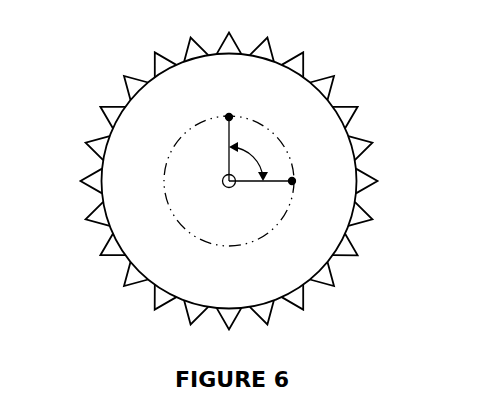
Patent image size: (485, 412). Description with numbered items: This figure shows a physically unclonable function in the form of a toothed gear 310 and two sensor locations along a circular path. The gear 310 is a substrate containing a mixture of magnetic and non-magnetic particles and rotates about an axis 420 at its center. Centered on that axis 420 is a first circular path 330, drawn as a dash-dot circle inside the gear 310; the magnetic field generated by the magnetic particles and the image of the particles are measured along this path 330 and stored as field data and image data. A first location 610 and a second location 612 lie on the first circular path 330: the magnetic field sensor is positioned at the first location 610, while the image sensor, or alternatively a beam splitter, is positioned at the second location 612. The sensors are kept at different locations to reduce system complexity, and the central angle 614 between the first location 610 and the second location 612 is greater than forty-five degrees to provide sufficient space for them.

The gear 310 is at (126, 104).
The first circular path 330 is at (180, 147).
The axis 420 is at (223, 186).
The first location 610 is at (228, 116).
The second location 612 is at (292, 184).
The central angle 614 is at (255, 153).